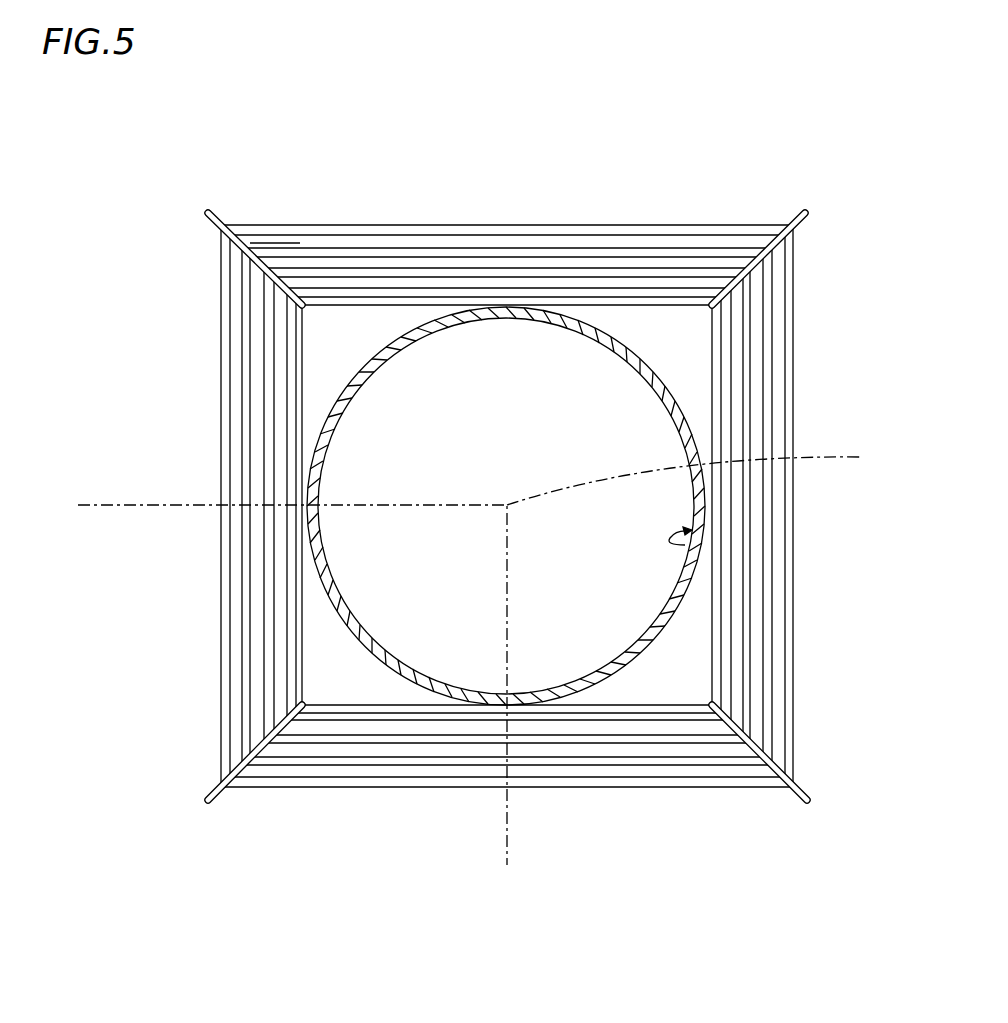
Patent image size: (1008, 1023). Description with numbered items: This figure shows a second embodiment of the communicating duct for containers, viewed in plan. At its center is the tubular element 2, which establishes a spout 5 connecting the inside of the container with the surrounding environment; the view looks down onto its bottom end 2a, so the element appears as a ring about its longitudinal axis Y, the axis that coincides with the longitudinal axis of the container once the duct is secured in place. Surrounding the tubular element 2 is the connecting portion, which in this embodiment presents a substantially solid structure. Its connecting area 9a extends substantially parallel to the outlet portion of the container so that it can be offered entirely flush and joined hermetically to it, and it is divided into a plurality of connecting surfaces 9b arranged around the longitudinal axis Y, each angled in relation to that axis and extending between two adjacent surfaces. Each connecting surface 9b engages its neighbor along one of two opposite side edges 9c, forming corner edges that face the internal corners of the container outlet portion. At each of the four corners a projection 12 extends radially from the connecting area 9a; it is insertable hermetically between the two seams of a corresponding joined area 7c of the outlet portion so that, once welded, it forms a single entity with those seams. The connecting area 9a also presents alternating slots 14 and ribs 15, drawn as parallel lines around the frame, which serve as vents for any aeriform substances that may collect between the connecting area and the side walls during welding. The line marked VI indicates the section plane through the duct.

The tubular element 2 is at (687, 400).
The bottom end of the tubular element 2a is at (690, 607).
The spout 5 is at (685, 545).
The joined area 7c is at (258, 244).
The connecting area 9a is at (268, 620).
The connecting surfaces 9b is at (445, 262).
The side edges 9c is at (272, 242).
The projection 12 is at (207, 216).
The slots 14 is at (656, 240).
The ribs 15 is at (577, 237).
The longitudinal axis of the tubular element Y is at (695, 476).
The section line VI is at (92, 511).